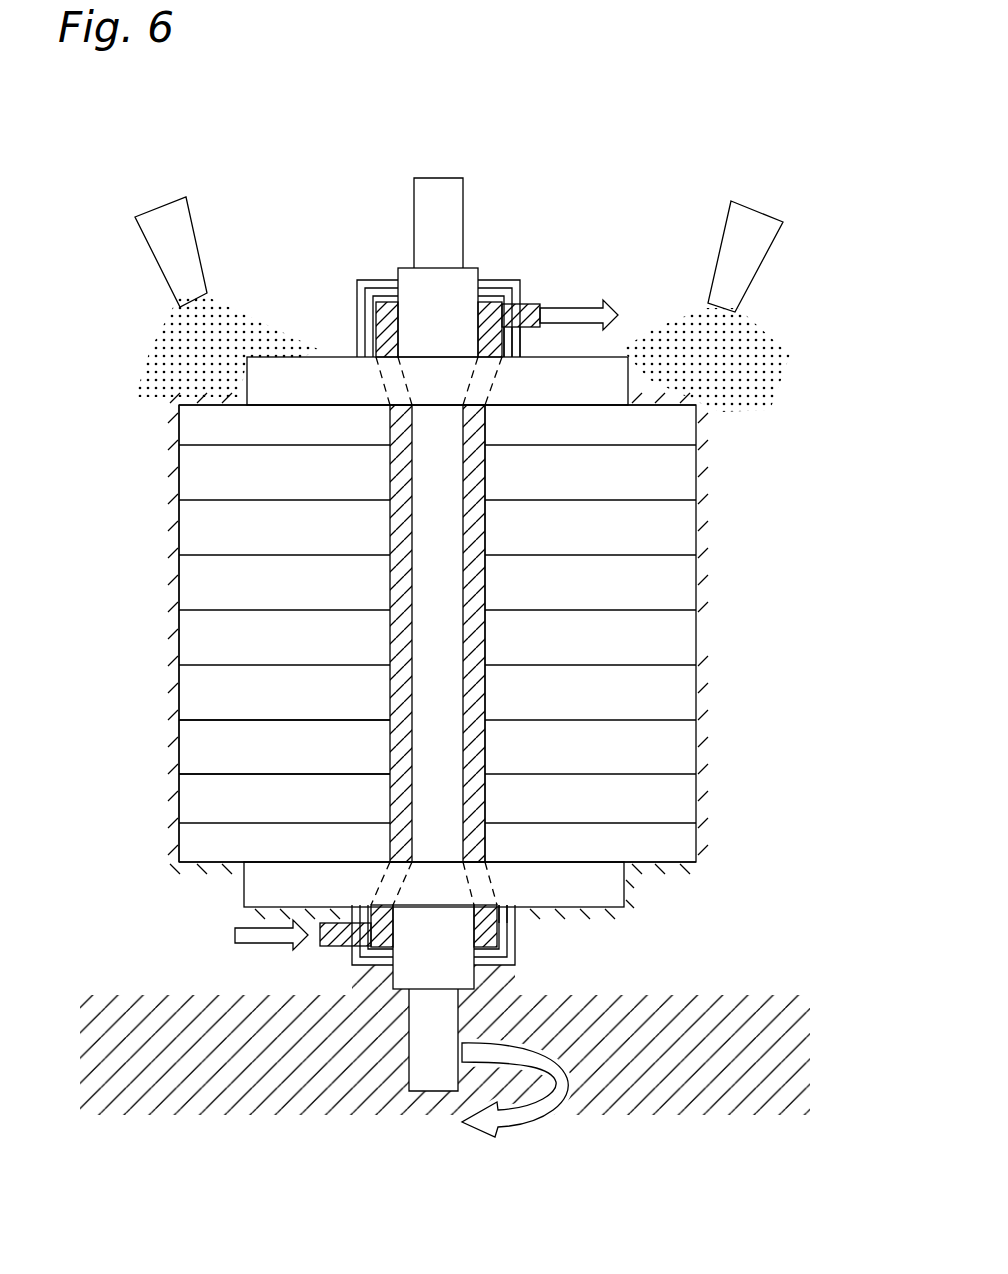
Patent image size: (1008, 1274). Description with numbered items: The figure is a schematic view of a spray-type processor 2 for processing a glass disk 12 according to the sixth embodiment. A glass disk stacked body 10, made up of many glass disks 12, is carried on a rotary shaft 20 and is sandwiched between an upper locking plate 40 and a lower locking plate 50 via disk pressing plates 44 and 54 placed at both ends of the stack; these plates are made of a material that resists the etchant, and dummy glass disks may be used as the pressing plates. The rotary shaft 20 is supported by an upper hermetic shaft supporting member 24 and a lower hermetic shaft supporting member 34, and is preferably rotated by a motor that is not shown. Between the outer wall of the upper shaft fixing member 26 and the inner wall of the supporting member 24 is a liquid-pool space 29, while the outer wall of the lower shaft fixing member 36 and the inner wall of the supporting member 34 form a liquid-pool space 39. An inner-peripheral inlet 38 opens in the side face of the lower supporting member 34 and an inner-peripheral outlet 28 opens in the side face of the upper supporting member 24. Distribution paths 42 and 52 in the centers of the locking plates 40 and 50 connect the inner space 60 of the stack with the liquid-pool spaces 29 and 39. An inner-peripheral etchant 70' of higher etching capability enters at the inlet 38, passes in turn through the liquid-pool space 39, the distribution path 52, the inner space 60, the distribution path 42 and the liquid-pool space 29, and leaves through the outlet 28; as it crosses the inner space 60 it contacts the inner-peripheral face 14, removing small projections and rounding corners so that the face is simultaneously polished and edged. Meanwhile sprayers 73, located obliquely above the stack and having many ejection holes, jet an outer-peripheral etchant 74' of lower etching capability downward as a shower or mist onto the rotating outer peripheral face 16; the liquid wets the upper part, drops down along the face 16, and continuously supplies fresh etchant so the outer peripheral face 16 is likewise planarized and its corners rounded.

The spray-type processor 2 is at (757, 823).
The glass disk stacked body 10 is at (697, 638).
The glass disk 12 is at (200, 688).
The inner-peripheral face 14 is at (397, 622).
The outer peripheral face 16 is at (176, 642).
The rotary shaft 20 is at (432, 190).
The hermetic shaft supporting member 24 is at (385, 288).
The shaft fixing member 26 is at (463, 285).
The inner-peripheral outlet 28 is at (528, 305).
The liquid-pool space 29 is at (494, 343).
The hermetic shaft supporting member 34 is at (353, 965).
The shaft fixing member 36 is at (455, 980).
The inner-peripheral inlet 38 is at (327, 946).
The liquid-pool space 39 is at (490, 930).
The locking plate 40 is at (258, 385).
The distribution path 42 is at (382, 378).
The disk pressing plate 44 is at (197, 425).
The locking plate 50 is at (598, 898).
The distribution path 52 is at (352, 880).
The disk pressing plate 54 is at (667, 848).
The inner space 60 is at (480, 690).
The inner-peripheral etchant 70' is at (297, 688).
The sprayer 73 is at (160, 218).
The outer-peripheral etchant 74' is at (460, 575).